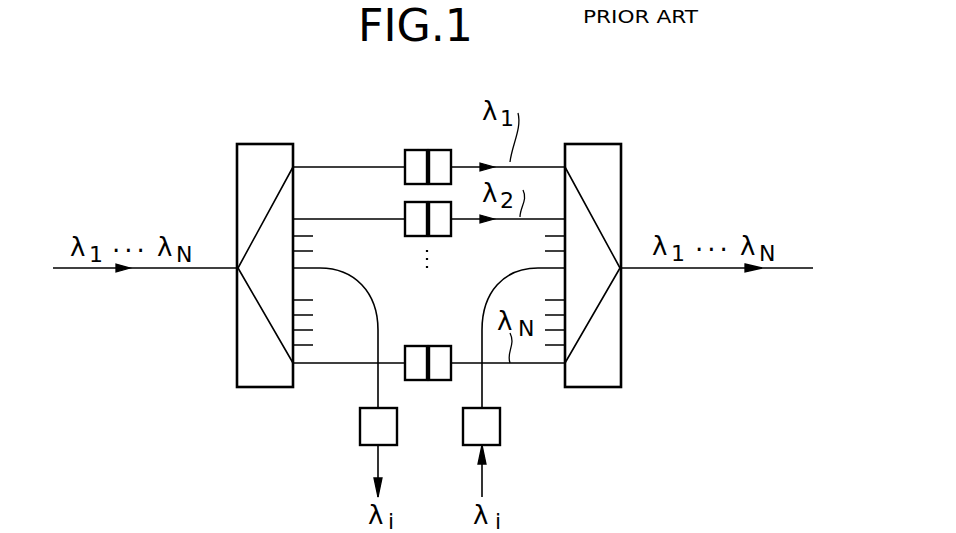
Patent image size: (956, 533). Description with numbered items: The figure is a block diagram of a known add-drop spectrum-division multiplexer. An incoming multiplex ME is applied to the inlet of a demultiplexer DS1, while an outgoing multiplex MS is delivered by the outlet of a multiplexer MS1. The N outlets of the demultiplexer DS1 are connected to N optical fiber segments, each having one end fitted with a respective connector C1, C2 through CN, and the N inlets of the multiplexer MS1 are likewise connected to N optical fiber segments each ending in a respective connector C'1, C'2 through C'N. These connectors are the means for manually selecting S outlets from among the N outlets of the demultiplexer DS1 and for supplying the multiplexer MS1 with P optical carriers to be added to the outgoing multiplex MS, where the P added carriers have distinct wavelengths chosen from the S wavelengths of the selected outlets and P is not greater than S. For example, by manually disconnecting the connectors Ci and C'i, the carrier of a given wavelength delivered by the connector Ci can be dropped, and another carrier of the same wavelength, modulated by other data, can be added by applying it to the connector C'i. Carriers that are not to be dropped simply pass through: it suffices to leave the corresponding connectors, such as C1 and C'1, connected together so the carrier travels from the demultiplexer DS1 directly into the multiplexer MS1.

The demultiplexer DS1 is at (258, 150).
The multiplexer MS1 is at (587, 150).
The incoming multiplex ME is at (80, 270).
The outgoing multiplex MS is at (703, 270).
The connector C1 is at (415, 158).
The connector C'1 is at (431, 139).
The connector C2 is at (418, 228).
The connector C'2 is at (456, 242).
The connector CN is at (420, 353).
The connector C'N is at (449, 342).
The connector Ci is at (372, 430).
The connector C'i is at (510, 452).